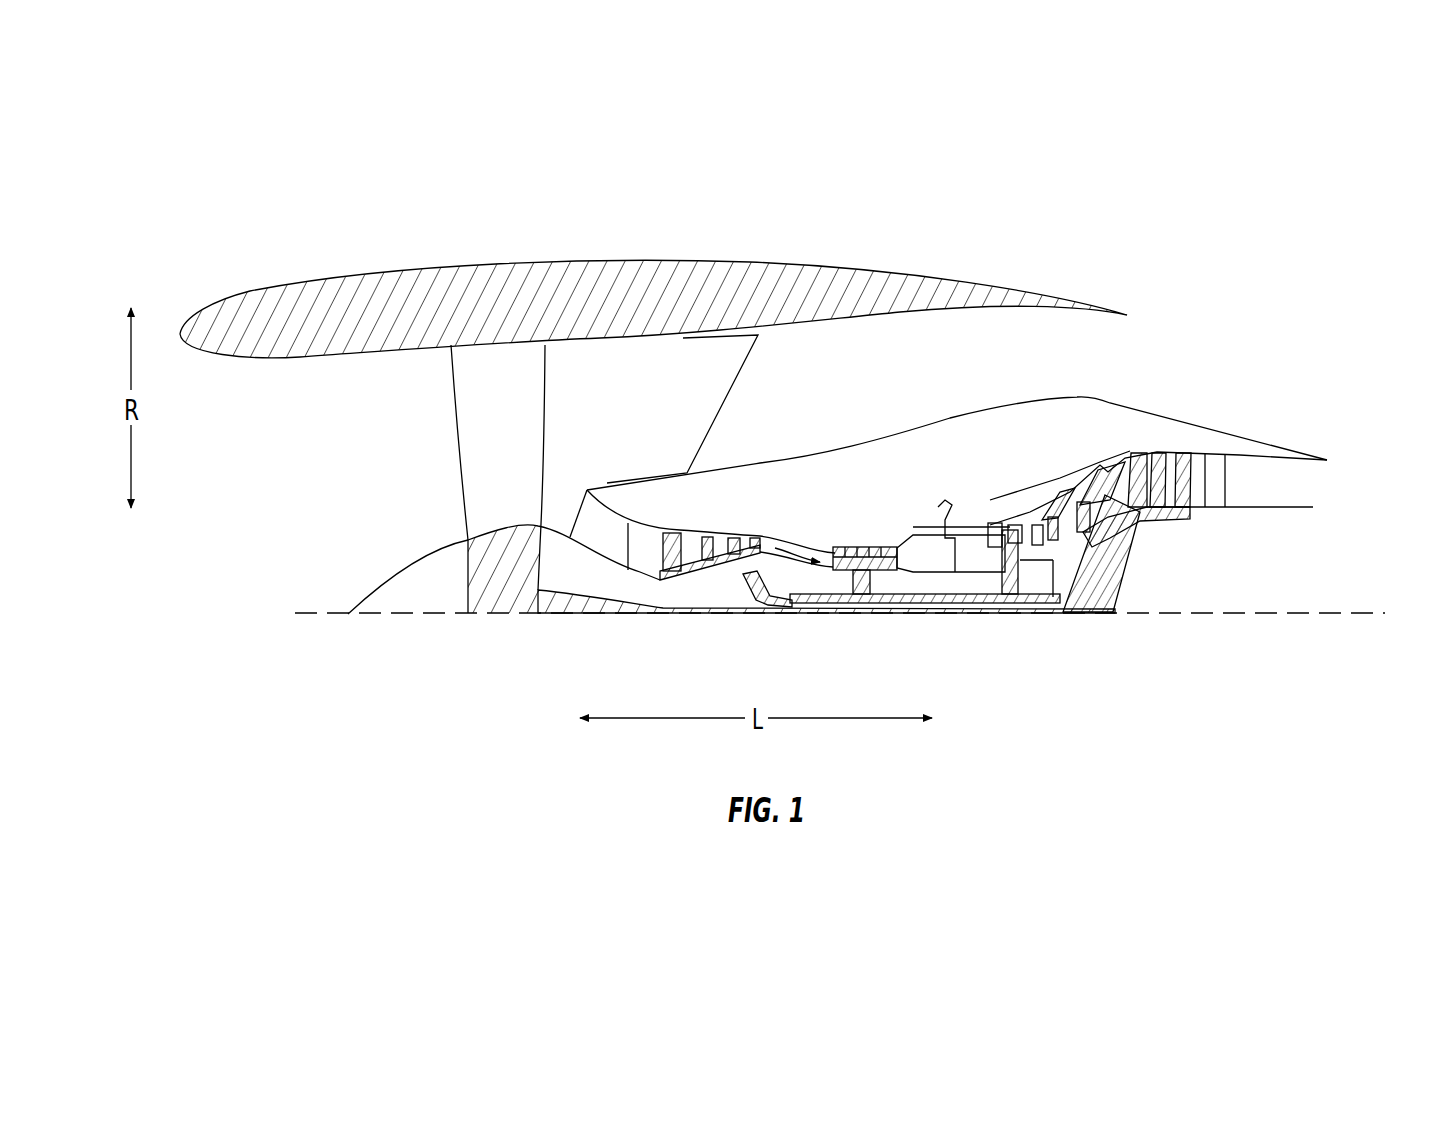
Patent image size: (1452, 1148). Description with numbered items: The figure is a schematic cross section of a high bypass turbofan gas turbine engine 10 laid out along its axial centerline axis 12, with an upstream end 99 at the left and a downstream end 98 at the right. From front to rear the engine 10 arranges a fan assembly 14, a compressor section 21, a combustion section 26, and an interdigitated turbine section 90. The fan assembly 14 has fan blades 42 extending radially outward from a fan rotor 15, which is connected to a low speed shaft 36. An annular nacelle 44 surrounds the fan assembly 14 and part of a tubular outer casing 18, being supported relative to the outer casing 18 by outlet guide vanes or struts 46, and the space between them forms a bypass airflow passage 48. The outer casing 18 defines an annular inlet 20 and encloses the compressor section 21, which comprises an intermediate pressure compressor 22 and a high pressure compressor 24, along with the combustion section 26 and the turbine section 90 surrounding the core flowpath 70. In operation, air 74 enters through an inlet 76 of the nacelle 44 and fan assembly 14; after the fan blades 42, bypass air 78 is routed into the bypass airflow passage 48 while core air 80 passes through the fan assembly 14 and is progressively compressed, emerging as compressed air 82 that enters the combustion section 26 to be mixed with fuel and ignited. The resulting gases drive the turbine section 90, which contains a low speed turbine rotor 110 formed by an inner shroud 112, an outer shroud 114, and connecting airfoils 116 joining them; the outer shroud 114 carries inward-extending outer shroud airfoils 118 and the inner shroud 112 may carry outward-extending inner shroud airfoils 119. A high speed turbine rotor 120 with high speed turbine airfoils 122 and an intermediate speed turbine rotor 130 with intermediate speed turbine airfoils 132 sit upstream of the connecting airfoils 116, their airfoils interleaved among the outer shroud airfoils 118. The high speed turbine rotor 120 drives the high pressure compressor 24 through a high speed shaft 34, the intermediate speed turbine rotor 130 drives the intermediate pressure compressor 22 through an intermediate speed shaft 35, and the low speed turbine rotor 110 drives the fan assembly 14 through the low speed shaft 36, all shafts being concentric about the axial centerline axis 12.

The gas turbine engine 10 is at (1207, 212).
The axial centerline axis 12 is at (1328, 612).
The fan assembly 14 is at (440, 462).
The fan rotor 15 is at (476, 562).
The outer casing 18 is at (867, 470).
The annular inlet 20 is at (583, 500).
The compressor section 21 is at (765, 500).
The intermediate pressure compressor 22 is at (672, 540).
The high pressure compressor 24 is at (835, 555).
The combustion section 26 is at (968, 497).
The high speed shaft 34 is at (853, 575).
The intermediate speed shaft 35 is at (752, 572).
The low speed shaft 36 is at (573, 605).
The fan blades 42 is at (460, 392).
The nacelle 44 is at (410, 272).
The outlet guide vanes or struts 46 is at (695, 424).
The bypass airflow passage 48 is at (810, 397).
The core flowpath 70 is at (605, 528).
The air 74 is at (307, 505).
The inlet 76 is at (295, 425).
The bypass air 78 is at (622, 412).
The core air 80 is at (572, 513).
The compressed air 82 is at (775, 537).
The turbine section 90 is at (1135, 410).
The downstream end 98 is at (1445, 522).
The upstream end 99 is at (155, 594).
The low speed turbine rotor 110 is at (1115, 578).
The inner shroud 112 is at (1182, 512).
The outer shroud 114 is at (1092, 470).
The connecting airfoil 116 is at (1115, 482).
The outer shroud airfoils 118 is at (985, 560).
The inner shroud airfoils 119 is at (1178, 452).
The high speed turbine rotor 120 is at (1000, 530).
The high speed turbine airfoils 122 is at (1005, 505).
The intermediate speed turbine rotor 130 is at (1060, 575).
The intermediate speed turbine airfoils 132 is at (1063, 542).